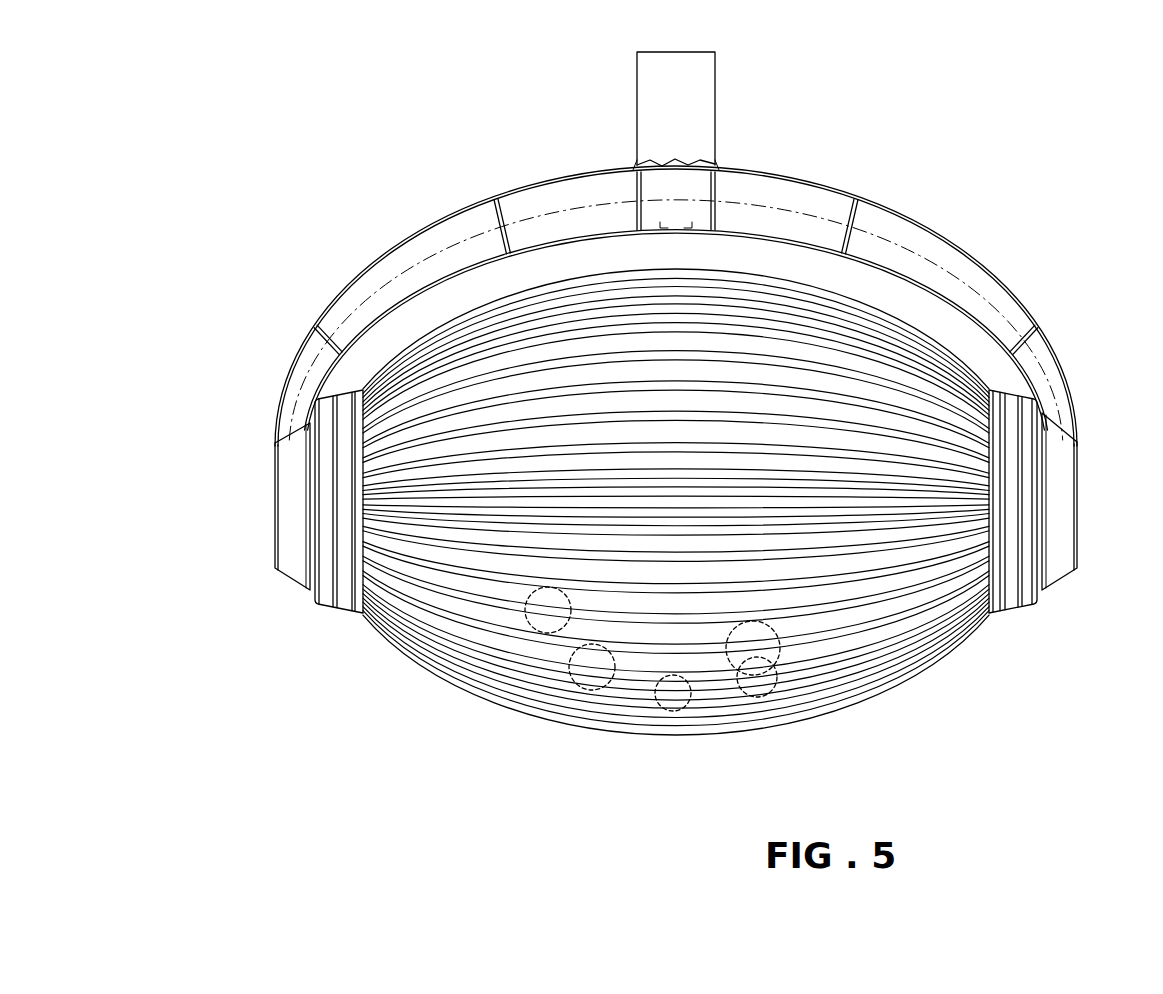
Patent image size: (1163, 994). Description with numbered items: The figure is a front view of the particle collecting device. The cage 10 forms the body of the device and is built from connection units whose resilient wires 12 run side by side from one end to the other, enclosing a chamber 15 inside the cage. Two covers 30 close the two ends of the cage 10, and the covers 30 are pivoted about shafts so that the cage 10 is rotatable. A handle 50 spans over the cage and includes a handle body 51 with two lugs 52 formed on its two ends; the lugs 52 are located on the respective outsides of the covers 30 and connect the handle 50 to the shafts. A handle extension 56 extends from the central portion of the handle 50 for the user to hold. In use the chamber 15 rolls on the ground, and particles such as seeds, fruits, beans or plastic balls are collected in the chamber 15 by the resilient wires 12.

The cage 10 is at (676, 553).
The resilient wires 12 is at (472, 648).
The chamber 15 is at (600, 733).
The covers 30 is at (340, 623).
The handle 50 is at (922, 207).
The handle body 51 is at (783, 207).
The lugs 52 is at (292, 505).
The handle extension 56 is at (653, 117).